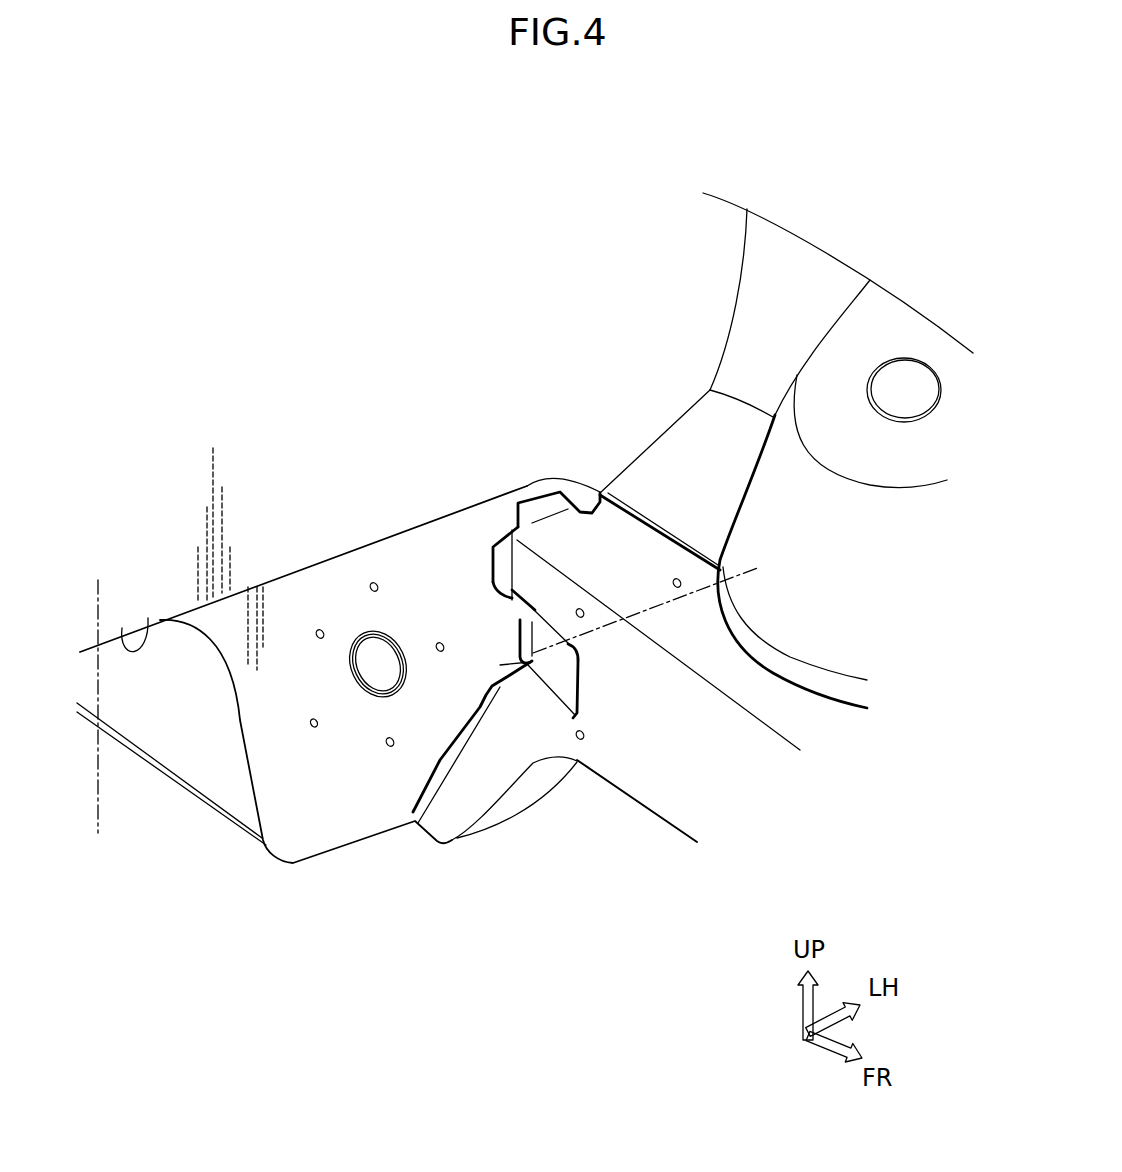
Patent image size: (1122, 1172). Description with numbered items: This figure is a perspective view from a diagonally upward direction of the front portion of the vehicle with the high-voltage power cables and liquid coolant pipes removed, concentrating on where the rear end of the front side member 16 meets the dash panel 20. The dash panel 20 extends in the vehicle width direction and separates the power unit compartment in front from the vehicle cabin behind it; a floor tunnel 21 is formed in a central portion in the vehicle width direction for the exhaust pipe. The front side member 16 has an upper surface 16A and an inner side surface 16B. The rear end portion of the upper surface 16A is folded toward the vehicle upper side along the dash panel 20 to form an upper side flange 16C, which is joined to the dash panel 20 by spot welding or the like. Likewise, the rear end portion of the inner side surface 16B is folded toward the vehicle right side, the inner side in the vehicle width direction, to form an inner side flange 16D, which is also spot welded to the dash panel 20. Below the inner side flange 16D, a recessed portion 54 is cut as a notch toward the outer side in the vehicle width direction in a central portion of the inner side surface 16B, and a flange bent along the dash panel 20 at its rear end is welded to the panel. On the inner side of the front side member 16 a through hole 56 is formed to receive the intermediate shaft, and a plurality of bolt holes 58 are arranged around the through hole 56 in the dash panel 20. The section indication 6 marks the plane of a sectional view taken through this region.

The section line 6- 6 is at (505, 663).
The front side member 16 is at (680, 828).
The upper surface 16A is at (783, 697).
The inner side surface 16B is at (653, 787).
The upper side flange 16C is at (547, 510).
The inner side flange 16D is at (492, 562).
The dash panel 20 is at (303, 840).
The floor tunnel 21 is at (148, 620).
The recessed portion 54 is at (560, 694).
The through hole 56 is at (367, 637).
The bolt holes 58 is at (310, 729).